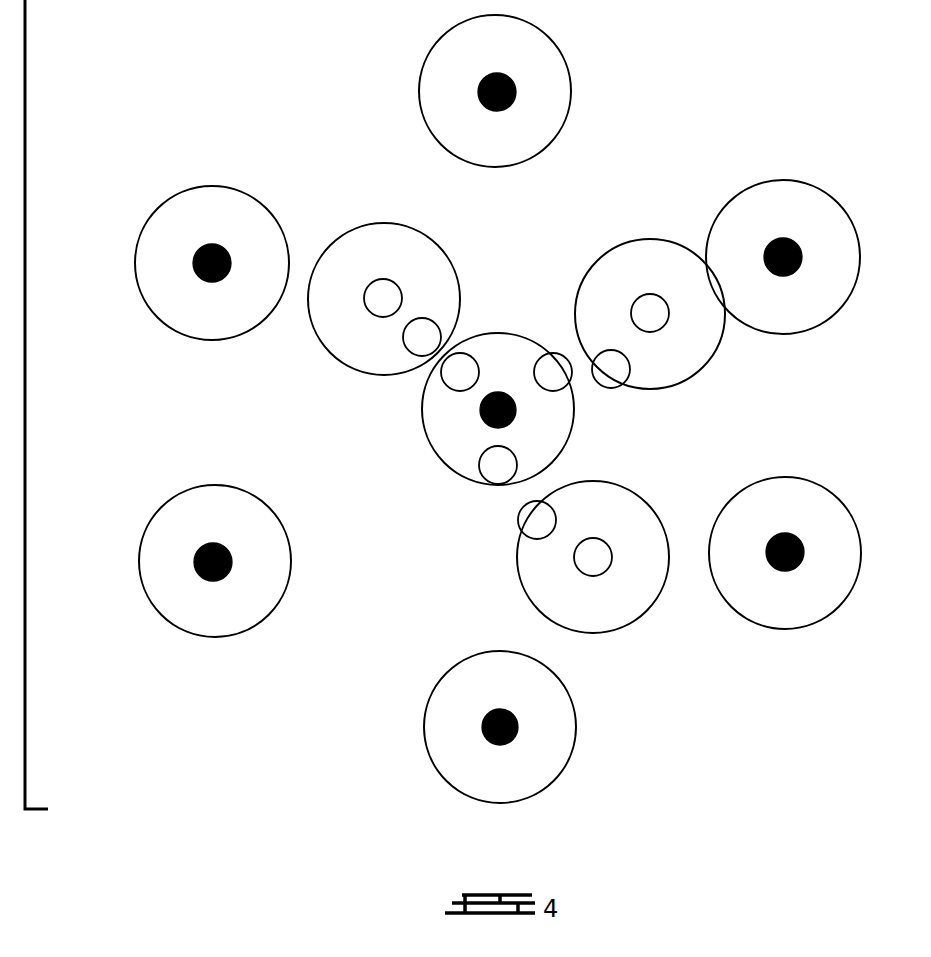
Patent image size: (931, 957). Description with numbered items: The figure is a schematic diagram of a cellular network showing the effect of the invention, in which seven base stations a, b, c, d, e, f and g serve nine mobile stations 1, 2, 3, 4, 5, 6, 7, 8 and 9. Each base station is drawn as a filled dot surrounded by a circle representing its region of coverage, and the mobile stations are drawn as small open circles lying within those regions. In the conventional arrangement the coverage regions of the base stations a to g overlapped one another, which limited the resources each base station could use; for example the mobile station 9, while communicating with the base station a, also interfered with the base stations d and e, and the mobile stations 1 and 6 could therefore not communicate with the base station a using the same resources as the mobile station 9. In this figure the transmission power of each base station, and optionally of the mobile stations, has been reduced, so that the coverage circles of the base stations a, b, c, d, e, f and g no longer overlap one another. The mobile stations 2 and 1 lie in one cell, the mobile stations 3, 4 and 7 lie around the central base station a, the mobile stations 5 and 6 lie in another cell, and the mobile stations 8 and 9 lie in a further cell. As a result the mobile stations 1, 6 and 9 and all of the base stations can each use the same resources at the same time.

The base station a is at (498, 409).
The base station b is at (495, 91).
The base station c is at (783, 257).
The base station d is at (785, 553).
The base station e is at (500, 727).
The base station f is at (215, 561).
The base station g is at (212, 263).
The mobile station 1 is at (379, 307).
The mobile station 2 is at (417, 344).
The mobile station 3 is at (454, 380).
The mobile station 4 is at (548, 380).
The mobile station 5 is at (605, 377).
The mobile station 6 is at (644, 321).
The mobile station 7 is at (492, 473).
The mobile station 8 is at (531, 528).
The mobile station 9 is at (587, 570).